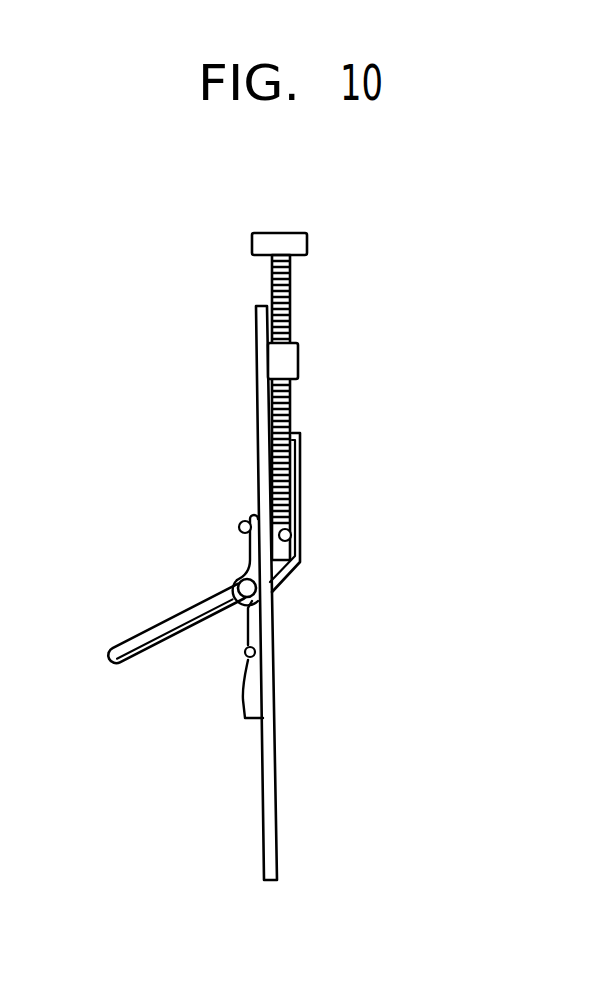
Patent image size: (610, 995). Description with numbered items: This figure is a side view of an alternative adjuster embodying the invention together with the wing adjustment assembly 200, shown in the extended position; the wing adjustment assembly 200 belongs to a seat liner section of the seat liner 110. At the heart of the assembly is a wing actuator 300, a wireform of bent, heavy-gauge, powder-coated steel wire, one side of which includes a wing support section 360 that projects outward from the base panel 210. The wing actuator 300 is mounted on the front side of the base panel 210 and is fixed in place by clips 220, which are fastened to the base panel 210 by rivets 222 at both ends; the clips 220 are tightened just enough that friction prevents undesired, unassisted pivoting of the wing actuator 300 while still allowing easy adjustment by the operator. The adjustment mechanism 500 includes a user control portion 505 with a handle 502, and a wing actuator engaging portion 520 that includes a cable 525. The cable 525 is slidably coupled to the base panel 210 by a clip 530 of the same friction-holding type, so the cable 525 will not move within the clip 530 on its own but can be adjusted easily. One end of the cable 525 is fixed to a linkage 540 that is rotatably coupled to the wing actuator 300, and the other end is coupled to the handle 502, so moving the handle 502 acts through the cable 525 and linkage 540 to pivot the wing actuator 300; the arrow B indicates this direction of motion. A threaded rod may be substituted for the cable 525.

The adjustment mechanism 500 is at (372, 287).
The handle 502 is at (307, 243).
The user control portion 505 is at (294, 212).
The cable 525 is at (291, 322).
The clip 530 is at (298, 362).
The wing actuator engaging portion 520 is at (308, 421).
The linkage 540 is at (300, 545).
The wing actuator 300 is at (301, 518).
The wing support section 360 is at (128, 667).
The rivets 222 is at (239, 528).
The clips 220 is at (248, 672).
The base panel 210 is at (275, 786).
The wing adjustment assembly 200 is at (256, 418).
The seat liner 110 is at (112, 638).
The direction B is at (104, 681).